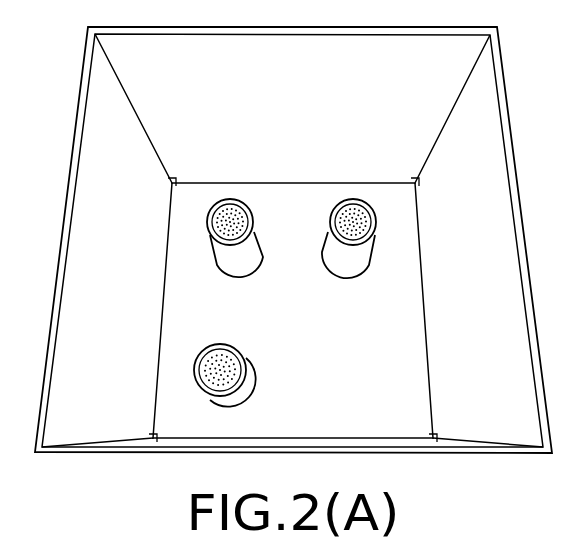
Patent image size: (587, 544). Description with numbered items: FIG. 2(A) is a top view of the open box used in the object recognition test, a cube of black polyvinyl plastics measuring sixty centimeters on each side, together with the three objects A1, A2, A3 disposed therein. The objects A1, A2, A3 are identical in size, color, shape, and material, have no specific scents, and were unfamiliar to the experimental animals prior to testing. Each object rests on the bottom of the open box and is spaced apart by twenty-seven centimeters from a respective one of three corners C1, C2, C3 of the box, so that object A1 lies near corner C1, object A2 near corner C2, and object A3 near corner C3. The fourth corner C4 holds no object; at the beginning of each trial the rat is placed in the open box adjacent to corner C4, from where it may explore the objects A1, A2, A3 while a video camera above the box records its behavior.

The corner C1 is at (174, 182).
The corner C2 is at (152, 437).
The corner C3 is at (413, 182).
The corner C4 is at (435, 437).
The object A1 is at (248, 255).
The object A2 is at (250, 380).
The object A3 is at (352, 257).